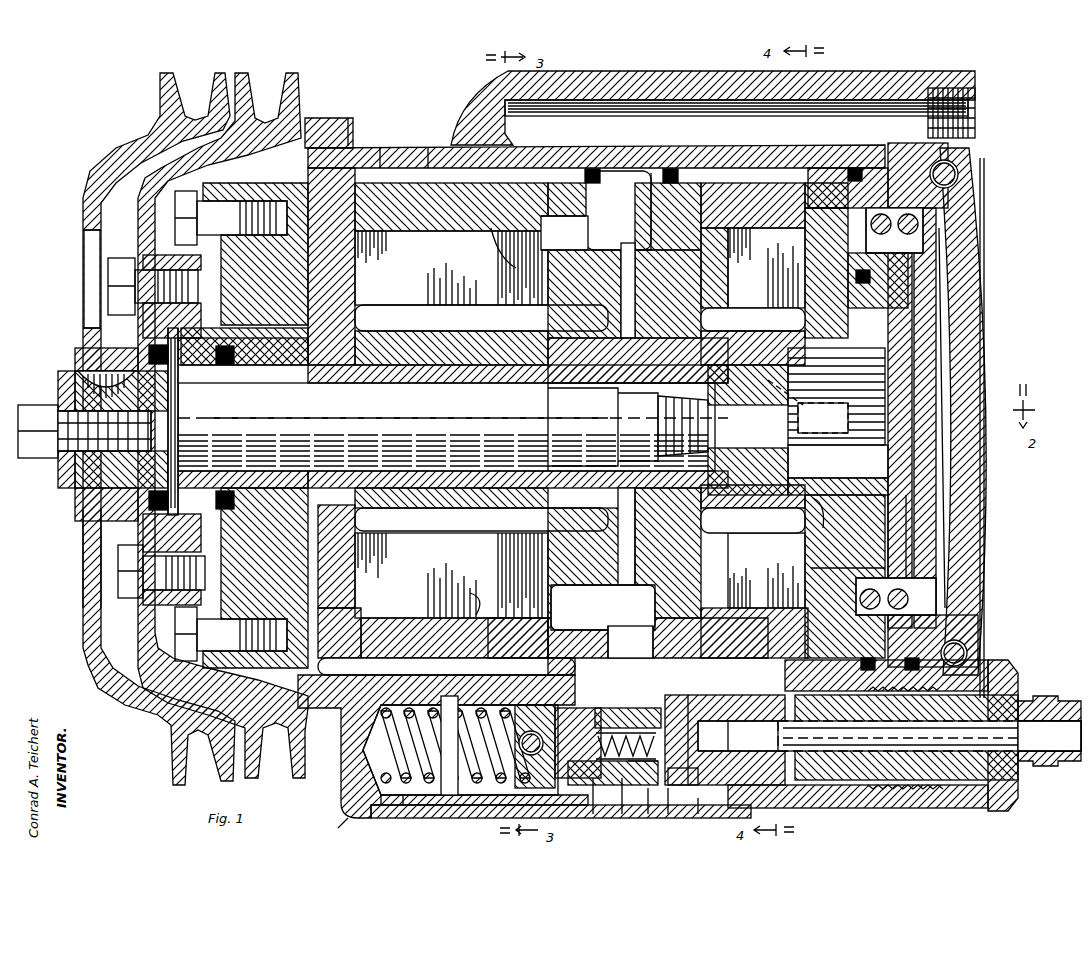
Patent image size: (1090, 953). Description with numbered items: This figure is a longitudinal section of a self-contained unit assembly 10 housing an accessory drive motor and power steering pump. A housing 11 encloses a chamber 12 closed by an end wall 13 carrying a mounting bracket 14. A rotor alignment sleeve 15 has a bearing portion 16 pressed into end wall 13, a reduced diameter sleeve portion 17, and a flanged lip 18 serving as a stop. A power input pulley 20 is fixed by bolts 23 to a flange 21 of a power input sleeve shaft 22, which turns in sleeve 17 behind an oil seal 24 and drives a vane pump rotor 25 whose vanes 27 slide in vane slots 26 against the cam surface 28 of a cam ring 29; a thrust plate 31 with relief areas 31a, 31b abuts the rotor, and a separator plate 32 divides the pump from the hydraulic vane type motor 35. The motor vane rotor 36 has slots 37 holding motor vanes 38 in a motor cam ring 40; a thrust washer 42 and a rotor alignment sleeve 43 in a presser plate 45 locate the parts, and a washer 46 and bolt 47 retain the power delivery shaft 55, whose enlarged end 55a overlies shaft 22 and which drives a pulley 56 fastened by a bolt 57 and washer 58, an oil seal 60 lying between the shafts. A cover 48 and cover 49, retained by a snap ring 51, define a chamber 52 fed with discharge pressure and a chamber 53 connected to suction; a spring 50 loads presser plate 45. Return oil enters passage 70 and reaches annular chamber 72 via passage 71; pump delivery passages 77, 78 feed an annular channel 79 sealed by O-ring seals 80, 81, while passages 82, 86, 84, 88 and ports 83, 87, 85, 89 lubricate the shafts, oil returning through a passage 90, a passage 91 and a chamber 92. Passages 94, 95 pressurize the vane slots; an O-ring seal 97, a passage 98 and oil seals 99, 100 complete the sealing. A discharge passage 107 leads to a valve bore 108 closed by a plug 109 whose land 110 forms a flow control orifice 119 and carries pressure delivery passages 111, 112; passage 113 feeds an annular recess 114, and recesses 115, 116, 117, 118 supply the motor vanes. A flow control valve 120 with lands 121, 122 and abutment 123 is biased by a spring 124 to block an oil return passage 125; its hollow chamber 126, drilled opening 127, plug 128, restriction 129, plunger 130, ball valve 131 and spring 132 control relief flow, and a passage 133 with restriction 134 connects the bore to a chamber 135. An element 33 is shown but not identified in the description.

The self-contained unit assembly 10 is at (446, 128).
The housing 11 is at (342, 128).
The chamber 12 is at (372, 138).
The end wall 13 is at (200, 192).
The mounting bracket 14 is at (305, 110).
The rotor alignment sleeve 15 is at (278, 378).
The bearing portion 16 is at (275, 300).
The reduced diameter sleeve portion 17 is at (412, 462).
The outwardly flanged lip 18 is at (215, 300).
The power input pulley 20 is at (240, 80).
The upstanding flange 21 is at (168, 632).
The power input sleeve shaft 22 is at (255, 384).
The bolts 23 is at (108, 562).
The oil seal 24 is at (195, 376).
The vane pump rotor 25 is at (488, 327).
The vane slots 26 is at (378, 300).
The vane 27 is at (408, 312).
The cam surface 28 is at (504, 258).
The cam ring 29 is at (466, 590).
The thrust plate 31 is at (330, 150).
The arcuate shaped relief area 31a is at (380, 246).
The arcuate shaped relief area 31b is at (378, 585).
The separator plate 32 is at (760, 258).
The pole block 33 is at (755, 215).
The hydraulic vane type motor 35 is at (748, 165).
The motor vane rotor 36 is at (855, 292).
The slots 37 is at (800, 280).
The motor vane 38 is at (758, 618).
The motor cam ring 40 is at (752, 550).
The thrust washer 42 is at (753, 332).
The rotor alignment sleeve 43 is at (833, 500).
The presser plate 45 is at (803, 523).
The washer 46 is at (790, 447).
The bolt 47 is at (832, 420).
The inner end plate or cover 48 is at (930, 388).
The cover 49 is at (967, 355).
The spring 50 is at (915, 587).
The snap ring 51 is at (947, 172).
The chamber 52 is at (905, 432).
The chamber 53 is at (975, 468).
The power delivery shaft 55 is at (490, 498).
The enlarged end 55a is at (100, 540).
The pulley 56 is at (152, 72).
The bolt 57 is at (32, 395).
The washer 58 is at (55, 360).
The oil seal 60 is at (118, 308).
The passage 70 is at (672, 59).
The passage 71 is at (545, 108).
The annular chamber 72 is at (420, 138).
The pump delivery passage 77 is at (563, 240).
The pump delivery passage 78 is at (590, 580).
The annular high pressure pump discharge channel 79 is at (610, 158).
The O-ring seal 80 is at (596, 210).
The O-ring seal 81 is at (640, 195).
The passage 82 is at (628, 265).
The port 83 is at (612, 402).
The axially extending passage 84 is at (583, 426).
The port 85 is at (350, 374).
The passage 86 is at (627, 548).
The port 87 is at (640, 420).
The axially extending passage 88 is at (575, 520).
The port 89 is at (345, 530).
The passage 90 is at (395, 408).
The passage 91 is at (800, 362).
The chamber 92 is at (827, 513).
The axially extending passage 94 is at (660, 305).
The axially extending passage 95 is at (678, 520).
The O-ring seal 97 is at (878, 520).
The passage 98 is at (868, 195).
The oil seal 99 is at (846, 158).
The oil seal 100 is at (915, 135).
The discharge passage 107 is at (630, 642).
The valve bore 108 is at (705, 818).
The plug 109 is at (1010, 660).
The land 110 is at (690, 765).
The pressure delivery passage 111 is at (806, 708).
The pressure delivery passage 112 is at (1062, 745).
The passage 113 is at (735, 713).
The annular recess 114 is at (708, 705).
The arcuate shaped recess 115 is at (714, 236).
The arcuate shaped recess 116 is at (766, 570).
The arcuate shaped recess 117 is at (795, 238).
The arcuate shaped recess 118 is at (788, 580).
The flow control orifice 119 is at (666, 795).
The flow control valve 120 is at (584, 780).
The land 121 is at (612, 780).
The land 122 is at (505, 690).
The axially extending abutment 123 is at (638, 780).
The spring 124 is at (333, 775).
The oil return passage 125 is at (517, 688).
The hollow chamber 126 is at (726, 732).
The drilled opening 127 is at (603, 700).
The plug 128 is at (522, 700).
The restriction 129 is at (562, 710).
The plunger 130 is at (630, 720).
The ball valve 131 is at (612, 774).
The spring 132 is at (639, 774).
The passage 133 is at (470, 810).
The restriction 134 is at (383, 797).
The chamber 135 is at (358, 810).